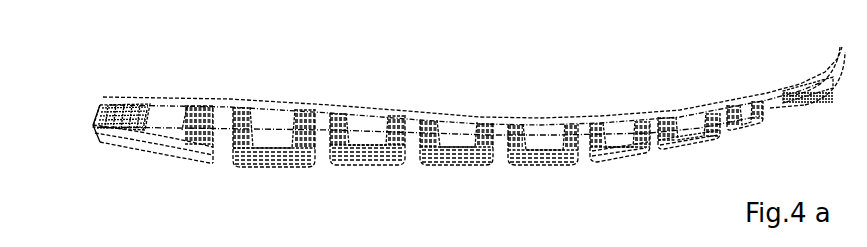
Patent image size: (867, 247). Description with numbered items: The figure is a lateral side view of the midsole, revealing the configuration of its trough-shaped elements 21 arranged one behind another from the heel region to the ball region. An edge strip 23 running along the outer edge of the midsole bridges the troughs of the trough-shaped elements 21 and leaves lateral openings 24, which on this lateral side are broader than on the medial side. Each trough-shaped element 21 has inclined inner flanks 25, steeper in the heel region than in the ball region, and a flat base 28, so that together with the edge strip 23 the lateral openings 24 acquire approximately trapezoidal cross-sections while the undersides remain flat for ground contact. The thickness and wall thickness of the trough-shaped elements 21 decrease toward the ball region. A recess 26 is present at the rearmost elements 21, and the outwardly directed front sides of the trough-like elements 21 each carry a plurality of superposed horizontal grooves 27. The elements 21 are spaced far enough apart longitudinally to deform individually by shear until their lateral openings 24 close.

The trough-shaped element 21 is at (367, 167).
The edge strip 23 is at (415, 120).
The lateral opening 24 is at (543, 140).
The inner flank 25 is at (292, 120).
The recess 26 is at (103, 107).
The horizontal groove 27 is at (200, 118).
The base 28 is at (460, 147).